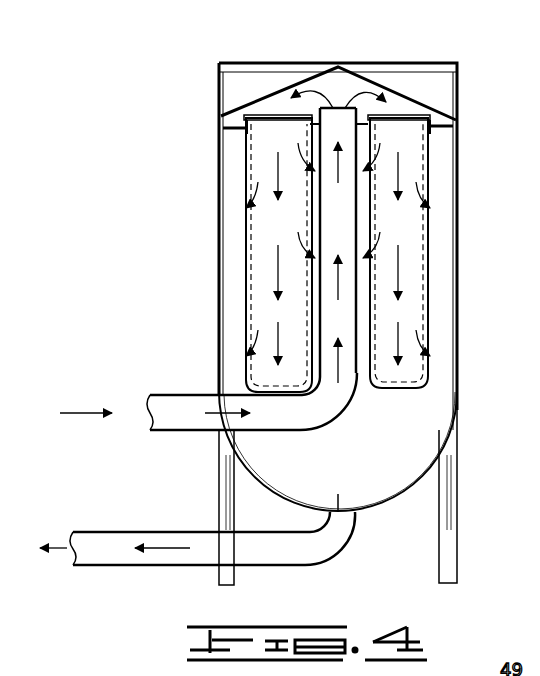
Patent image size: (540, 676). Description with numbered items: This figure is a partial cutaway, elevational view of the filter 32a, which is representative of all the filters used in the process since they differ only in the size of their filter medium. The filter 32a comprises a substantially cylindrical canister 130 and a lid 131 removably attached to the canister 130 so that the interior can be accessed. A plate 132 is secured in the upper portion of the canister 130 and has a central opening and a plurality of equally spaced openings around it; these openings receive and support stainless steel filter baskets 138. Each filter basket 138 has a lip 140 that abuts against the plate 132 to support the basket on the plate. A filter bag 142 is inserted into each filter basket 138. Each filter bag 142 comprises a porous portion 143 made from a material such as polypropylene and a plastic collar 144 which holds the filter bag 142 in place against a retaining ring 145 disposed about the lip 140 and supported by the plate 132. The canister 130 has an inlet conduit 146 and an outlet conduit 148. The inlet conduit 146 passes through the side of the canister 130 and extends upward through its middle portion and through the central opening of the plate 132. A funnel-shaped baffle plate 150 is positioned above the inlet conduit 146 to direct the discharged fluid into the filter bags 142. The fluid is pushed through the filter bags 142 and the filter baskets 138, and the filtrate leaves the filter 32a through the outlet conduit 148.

The filter 32a is at (300, 293).
The canister 130 is at (221, 328).
The lid 131 is at (446, 64).
The plate 132 is at (446, 124).
The filter basket 138 is at (249, 268).
The lip 140 is at (244, 128).
The filter bag 142 is at (248, 178).
The porous portion 143 is at (251, 222).
The plastic collar 144 is at (244, 117).
The retaining ring 145 is at (313, 124).
The inlet conduit 146 is at (192, 433).
The outlet conduit 148 is at (113, 530).
The funnel-shaped baffle plate 150 is at (416, 98).